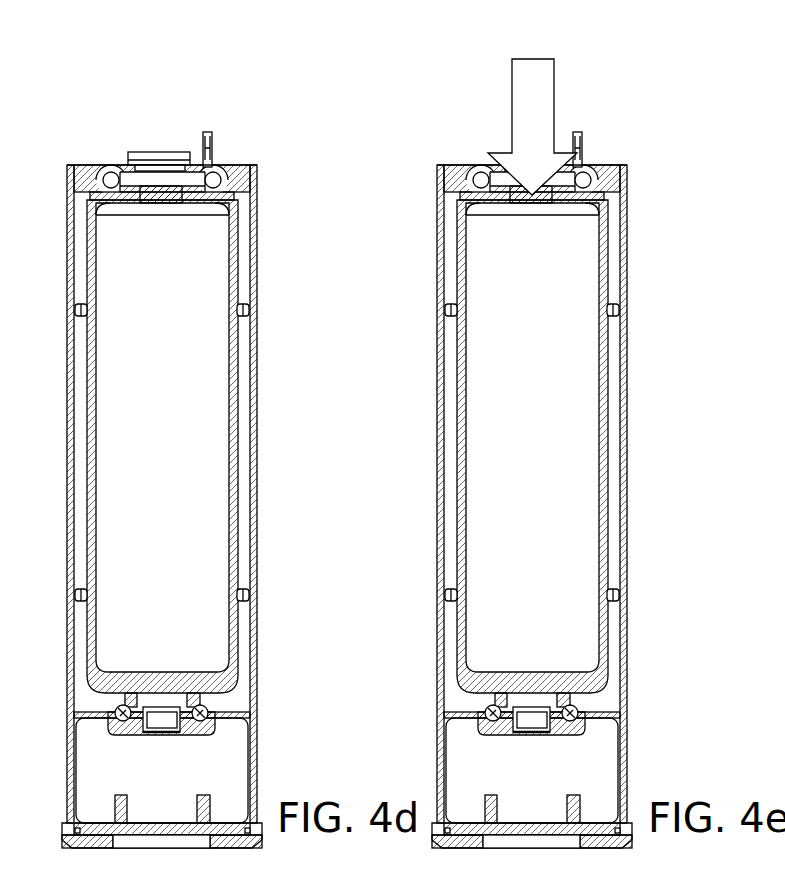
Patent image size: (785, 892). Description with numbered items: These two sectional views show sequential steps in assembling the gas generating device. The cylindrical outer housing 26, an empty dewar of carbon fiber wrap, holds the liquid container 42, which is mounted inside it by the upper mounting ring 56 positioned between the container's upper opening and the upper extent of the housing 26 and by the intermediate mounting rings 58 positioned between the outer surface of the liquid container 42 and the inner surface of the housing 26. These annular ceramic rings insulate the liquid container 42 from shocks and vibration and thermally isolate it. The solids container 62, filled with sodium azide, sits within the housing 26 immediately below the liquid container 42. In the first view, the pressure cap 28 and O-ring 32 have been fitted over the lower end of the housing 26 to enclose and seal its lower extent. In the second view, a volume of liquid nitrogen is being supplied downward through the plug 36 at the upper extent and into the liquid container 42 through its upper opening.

In FIG. 4d, the outer housing 26 is at (255, 165).
In FIG. 4e, the outer housing 26 is at (627, 172).
In FIG. 4d, the pressure cap 28 is at (249, 828).
In FIG. 4d, the O-ring 32 is at (75, 828).
In FIG. 4d, the plug 36 is at (166, 140).
In FIG. 4e, the plug 36 is at (527, 165).
In FIG. 4d, the liquid container 42 is at (236, 420).
In FIG. 4e, the liquid container 42 is at (606, 420).
In FIG. 4d, the upper mounting ring 56 is at (107, 176).
In FIG. 4e, the upper mounting ring 56 is at (478, 176).
In FIG. 4d, the intermediate mounting rings 58 is at (80, 308).
In FIG. 4e, the intermediate mounting rings 58 is at (450, 308).
In FIG. 4d, the solids container 62 is at (185, 762).
In FIG. 4e, the solids container 62 is at (508, 765).